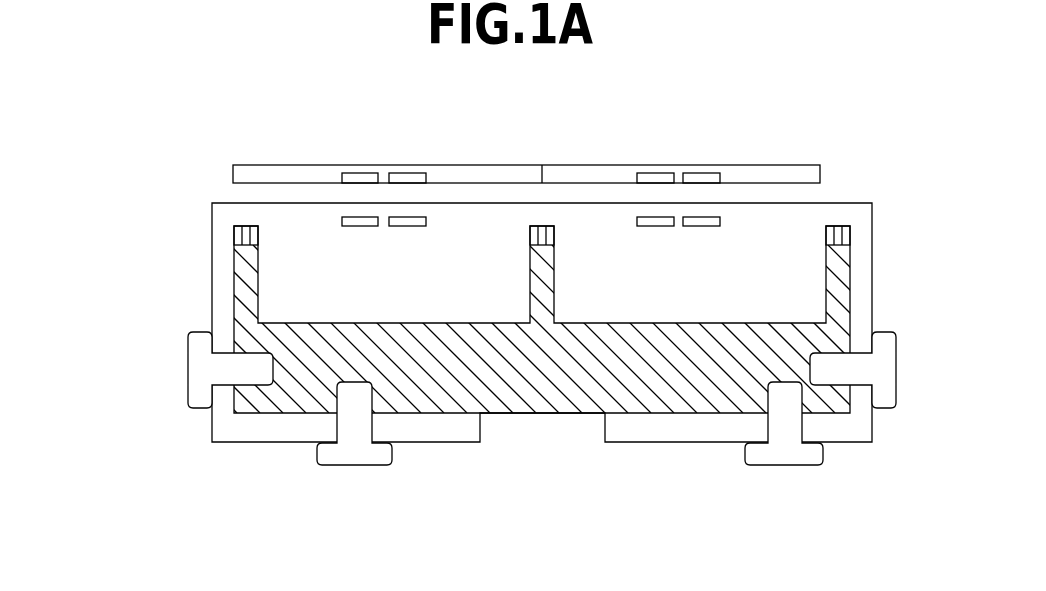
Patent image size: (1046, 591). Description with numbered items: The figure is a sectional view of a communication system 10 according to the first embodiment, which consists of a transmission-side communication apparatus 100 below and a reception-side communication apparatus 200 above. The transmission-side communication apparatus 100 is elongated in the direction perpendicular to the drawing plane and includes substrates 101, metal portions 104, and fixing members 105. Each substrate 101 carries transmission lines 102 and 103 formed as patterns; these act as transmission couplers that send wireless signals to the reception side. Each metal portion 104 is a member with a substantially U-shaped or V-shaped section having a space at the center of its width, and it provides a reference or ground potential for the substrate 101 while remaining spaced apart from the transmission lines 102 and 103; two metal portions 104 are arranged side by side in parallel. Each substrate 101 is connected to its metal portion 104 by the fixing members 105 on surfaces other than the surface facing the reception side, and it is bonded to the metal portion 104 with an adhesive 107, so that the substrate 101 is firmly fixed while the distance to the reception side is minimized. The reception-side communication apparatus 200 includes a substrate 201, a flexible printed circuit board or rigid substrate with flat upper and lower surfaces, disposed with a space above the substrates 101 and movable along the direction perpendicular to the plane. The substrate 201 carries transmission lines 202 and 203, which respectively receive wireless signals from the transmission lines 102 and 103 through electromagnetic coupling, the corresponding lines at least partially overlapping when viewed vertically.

The communication system 10 is at (97, 92).
The transmission-side communication apparatus 100 is at (544, 353).
The substrate 101 is at (212, 213).
The transmission line 102 is at (407, 227).
The transmission line 103 is at (658, 217).
The metal portion 104 is at (850, 289).
The fixing member 105 is at (257, 385).
The adhesive 107 is at (235, 238).
The reception-side communication apparatus 200 is at (208, 144).
The substrate 201 is at (798, 165).
The transmission line 202 is at (407, 166).
The transmission line 203 is at (700, 166).